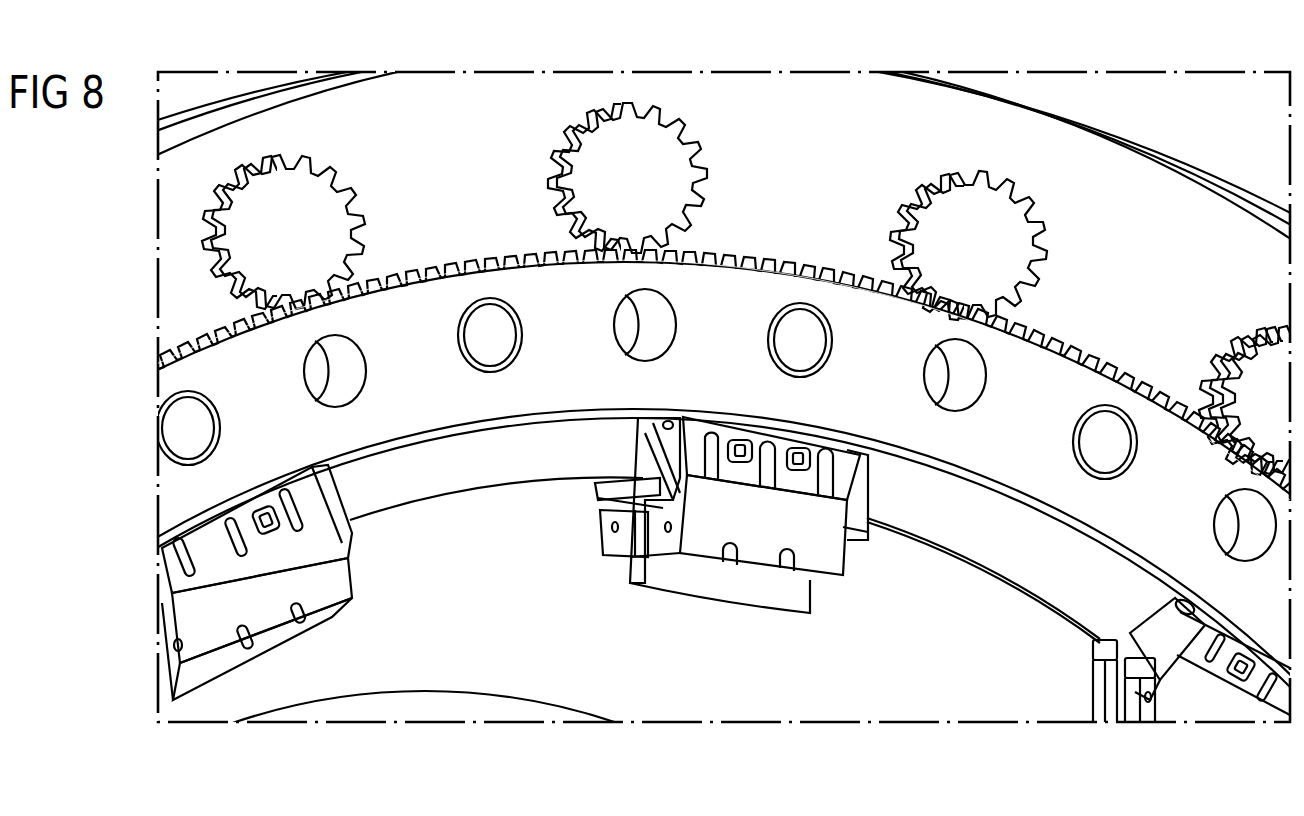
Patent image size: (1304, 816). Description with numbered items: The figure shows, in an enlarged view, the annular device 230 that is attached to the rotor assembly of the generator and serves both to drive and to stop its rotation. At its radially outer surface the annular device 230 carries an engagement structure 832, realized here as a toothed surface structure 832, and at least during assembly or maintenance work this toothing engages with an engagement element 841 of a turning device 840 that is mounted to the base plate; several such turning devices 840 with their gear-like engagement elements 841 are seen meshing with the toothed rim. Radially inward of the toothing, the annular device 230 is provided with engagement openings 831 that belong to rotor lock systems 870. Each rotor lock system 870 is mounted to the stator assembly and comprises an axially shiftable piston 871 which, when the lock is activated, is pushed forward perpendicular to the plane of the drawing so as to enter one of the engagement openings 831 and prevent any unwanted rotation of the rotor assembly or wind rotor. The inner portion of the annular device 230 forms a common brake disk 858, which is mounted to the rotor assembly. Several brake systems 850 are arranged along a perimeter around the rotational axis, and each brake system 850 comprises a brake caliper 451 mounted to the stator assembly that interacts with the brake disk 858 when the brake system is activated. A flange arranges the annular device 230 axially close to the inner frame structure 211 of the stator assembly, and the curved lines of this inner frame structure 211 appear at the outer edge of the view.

The inner frame structure 211 is at (1207, 212).
The annular device 230 is at (433, 296).
The engagement structure 832 is at (490, 262).
The turning device 840 is at (753, 283).
The engagement element 841 is at (347, 160).
The rotor lock system 870 is at (775, 303).
The engagement opening 831 is at (657, 327).
The axially shiftable piston 871 is at (500, 348).
The brake disk 858 is at (473, 480).
The brake system 850 is at (745, 610).
The brake caliper 451 is at (1093, 693).